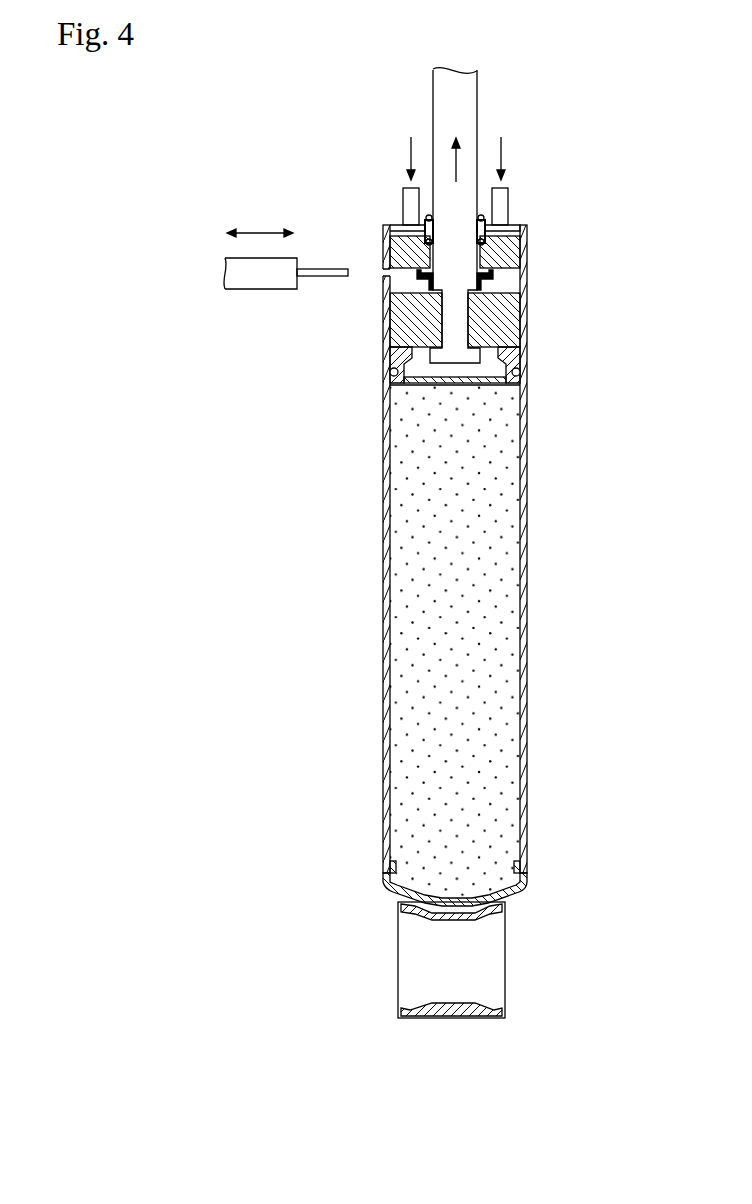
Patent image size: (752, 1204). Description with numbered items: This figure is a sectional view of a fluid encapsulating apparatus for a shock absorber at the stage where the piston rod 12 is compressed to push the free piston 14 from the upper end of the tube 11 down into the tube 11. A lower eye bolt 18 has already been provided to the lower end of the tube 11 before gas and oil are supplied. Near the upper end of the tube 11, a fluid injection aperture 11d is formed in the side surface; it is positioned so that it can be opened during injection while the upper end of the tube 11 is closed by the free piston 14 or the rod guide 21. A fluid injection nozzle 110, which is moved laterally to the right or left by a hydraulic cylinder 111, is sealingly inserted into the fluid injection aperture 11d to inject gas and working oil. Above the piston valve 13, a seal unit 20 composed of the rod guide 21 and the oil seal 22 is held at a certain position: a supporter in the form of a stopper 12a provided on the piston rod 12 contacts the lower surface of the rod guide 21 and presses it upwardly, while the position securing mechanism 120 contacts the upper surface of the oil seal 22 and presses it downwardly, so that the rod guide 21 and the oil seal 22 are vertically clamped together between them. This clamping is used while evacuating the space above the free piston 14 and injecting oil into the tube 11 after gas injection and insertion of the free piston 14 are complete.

The tube 11 is at (527, 552).
The fluid injection aperture 11d is at (383, 272).
The piston rod 12 is at (434, 93).
The stopper 12a is at (490, 277).
The piston valve 13 is at (517, 323).
The free piston 14 is at (470, 386).
The lower eye bolt 18 is at (505, 963).
The seal unit 20 is at (540, 232).
The rod guide 21 is at (518, 252).
The oil seal 22 is at (513, 224).
The fluid injection nozzle 110 is at (323, 277).
The hydraulic cylinder 111 is at (263, 289).
The position securing mechanism 120 is at (403, 205).